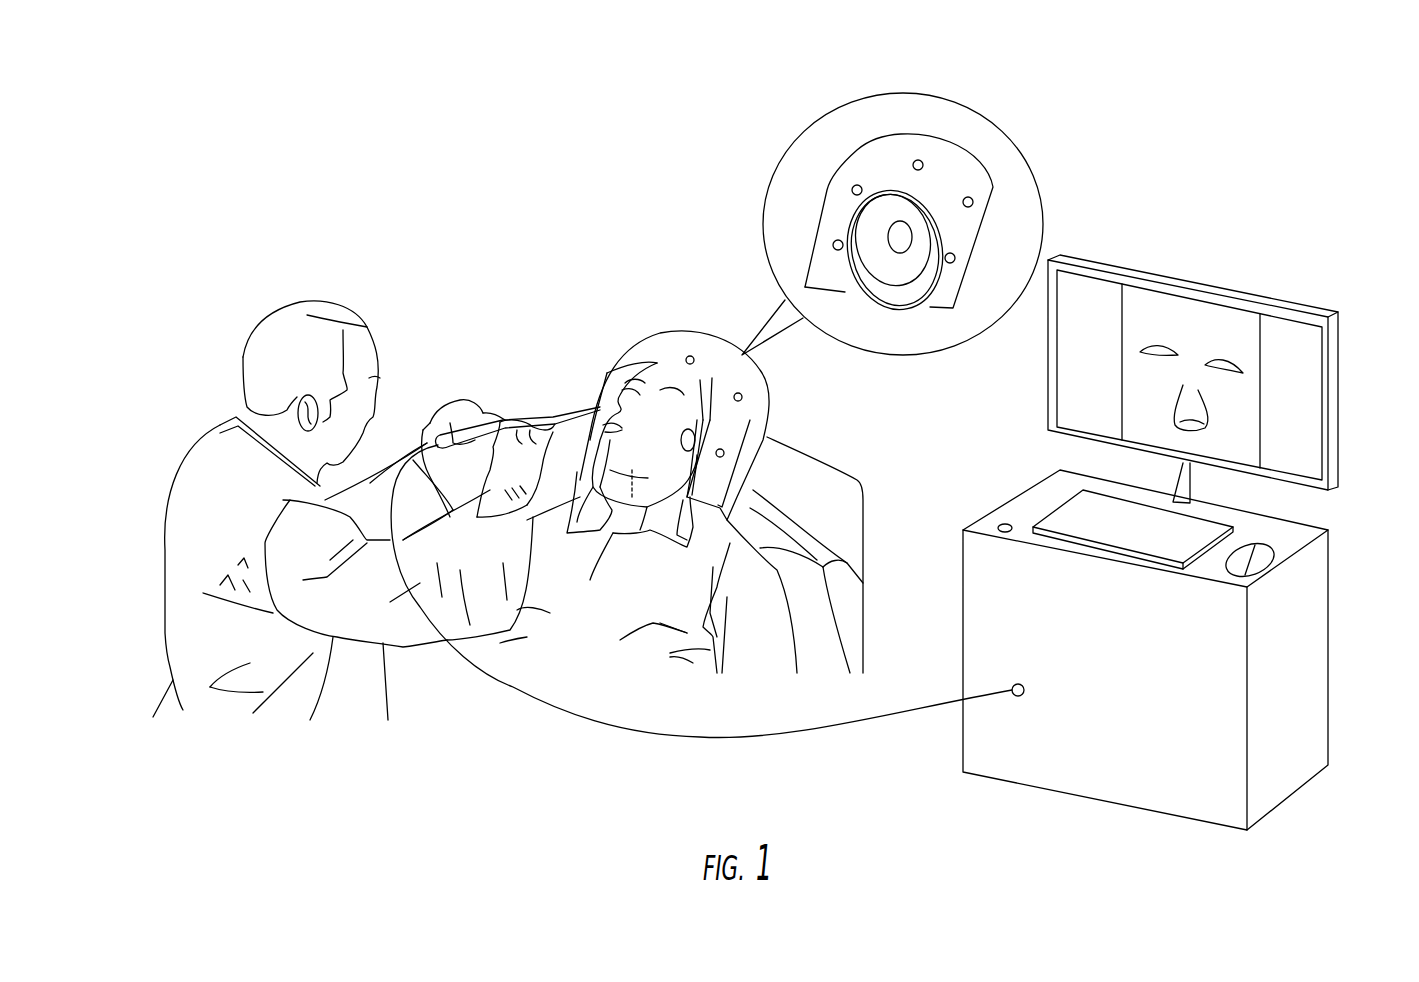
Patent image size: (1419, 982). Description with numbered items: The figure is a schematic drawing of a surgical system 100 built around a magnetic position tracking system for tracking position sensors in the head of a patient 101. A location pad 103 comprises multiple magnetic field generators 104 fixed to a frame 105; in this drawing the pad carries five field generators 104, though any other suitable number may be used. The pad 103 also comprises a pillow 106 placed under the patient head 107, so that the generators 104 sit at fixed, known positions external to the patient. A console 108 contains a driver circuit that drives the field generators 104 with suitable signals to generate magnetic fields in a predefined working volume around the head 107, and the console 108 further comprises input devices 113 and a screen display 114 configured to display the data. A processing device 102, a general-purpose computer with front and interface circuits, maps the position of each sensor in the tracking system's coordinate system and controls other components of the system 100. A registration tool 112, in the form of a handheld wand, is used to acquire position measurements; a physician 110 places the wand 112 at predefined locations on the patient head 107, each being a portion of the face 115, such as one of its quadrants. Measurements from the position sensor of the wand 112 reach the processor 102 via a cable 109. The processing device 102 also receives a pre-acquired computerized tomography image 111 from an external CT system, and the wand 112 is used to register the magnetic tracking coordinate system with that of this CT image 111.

The surgical system 100 is at (1150, 176).
The patient 101 is at (600, 359).
The processing device 102 is at (1313, 573).
The location pad 103 is at (745, 186).
The magnetic field generators 104 is at (966, 197).
The frame 105 is at (970, 170).
The pillow 106 is at (897, 282).
The patient head 107 is at (673, 375).
The console 108 is at (1256, 270).
The cable 109 is at (817, 731).
The physician 110 is at (190, 477).
The computerized tomography (CT) image 111 is at (1253, 418).
The registration tool 112 is at (497, 417).
The input devices 113 is at (991, 498).
The screen display 114 is at (1195, 283).
The face 115 is at (667, 410).